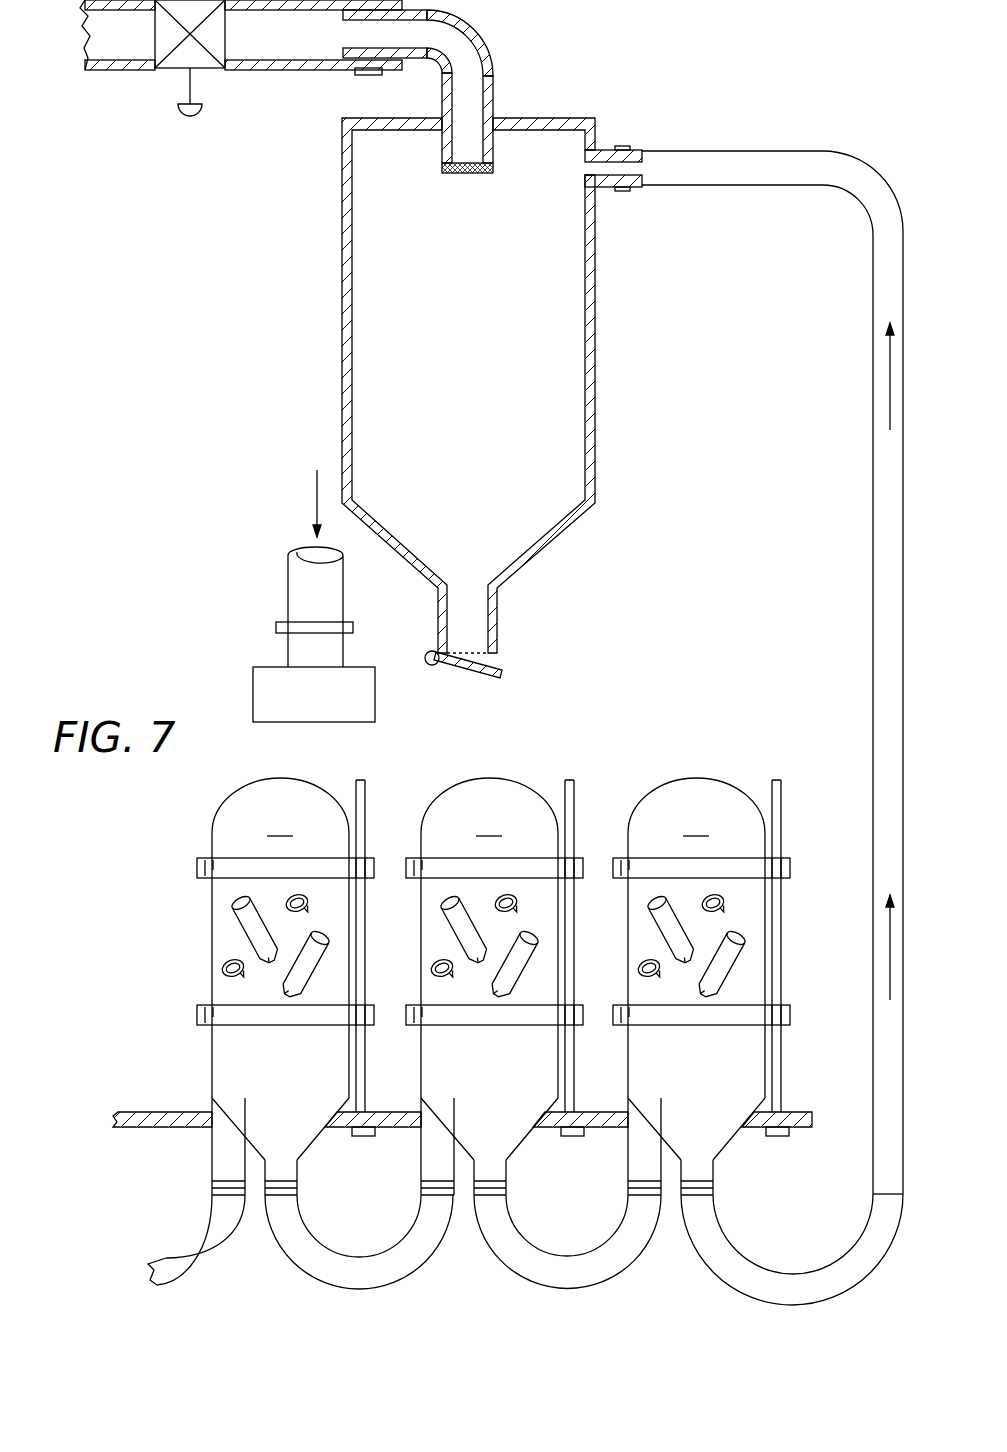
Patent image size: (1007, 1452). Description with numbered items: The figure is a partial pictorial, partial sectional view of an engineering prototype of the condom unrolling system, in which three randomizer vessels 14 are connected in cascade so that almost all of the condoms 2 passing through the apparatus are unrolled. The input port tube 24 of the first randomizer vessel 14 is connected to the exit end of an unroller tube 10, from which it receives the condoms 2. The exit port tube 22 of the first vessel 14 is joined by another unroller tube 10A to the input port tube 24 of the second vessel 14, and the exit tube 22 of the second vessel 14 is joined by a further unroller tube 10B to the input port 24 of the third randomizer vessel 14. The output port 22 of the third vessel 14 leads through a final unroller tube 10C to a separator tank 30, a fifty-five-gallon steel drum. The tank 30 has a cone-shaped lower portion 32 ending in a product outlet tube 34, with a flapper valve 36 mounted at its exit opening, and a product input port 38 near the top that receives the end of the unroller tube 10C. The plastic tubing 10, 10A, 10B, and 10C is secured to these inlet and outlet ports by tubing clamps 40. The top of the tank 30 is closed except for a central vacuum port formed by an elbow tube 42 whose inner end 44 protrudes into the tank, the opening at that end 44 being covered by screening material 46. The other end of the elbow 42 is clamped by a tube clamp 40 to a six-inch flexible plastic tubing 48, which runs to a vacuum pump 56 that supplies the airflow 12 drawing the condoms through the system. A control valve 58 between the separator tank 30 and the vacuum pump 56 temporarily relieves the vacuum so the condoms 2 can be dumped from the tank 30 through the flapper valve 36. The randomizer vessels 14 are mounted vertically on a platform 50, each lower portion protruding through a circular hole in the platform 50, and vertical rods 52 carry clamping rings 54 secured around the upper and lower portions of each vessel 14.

The condoms 2 is at (225, 962).
The unroller tube 10 is at (172, 1258).
The unroller tube 10A is at (383, 1258).
The unroller tube 10B is at (590, 1260).
The unroller tube 10C is at (873, 492).
The gas flow direction 12 is at (313, 505).
The randomizer vessel 14 is at (488, 938).
The exit port tube 22 is at (292, 1172).
The input port tube 24 is at (212, 1168).
The separator tank 30 is at (342, 330).
The cone-shaped lower portion 32 is at (563, 548).
The product outlet tube 34 is at (500, 628).
The flapper valve 36 is at (453, 672).
The product input port 38 is at (603, 150).
The tubing clamp 40 is at (377, 77).
The elbow tube 42 is at (495, 72).
The interior end of elbow 44 is at (493, 143).
The screening material 46 is at (475, 175).
The flexible plastic tubing 48 is at (290, 71).
The platform 50 is at (790, 1110).
The vertical rod 52 is at (368, 800).
The clamping ring 54 is at (197, 866).
The vacuum pump 56 is at (377, 697).
The control valve 58 is at (177, 62).